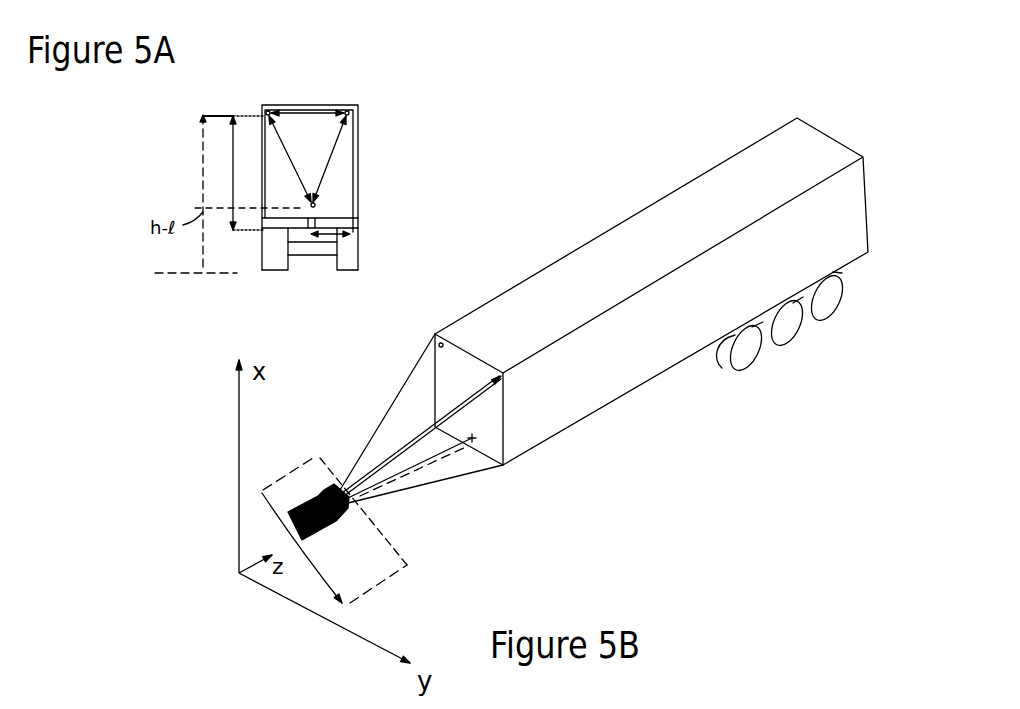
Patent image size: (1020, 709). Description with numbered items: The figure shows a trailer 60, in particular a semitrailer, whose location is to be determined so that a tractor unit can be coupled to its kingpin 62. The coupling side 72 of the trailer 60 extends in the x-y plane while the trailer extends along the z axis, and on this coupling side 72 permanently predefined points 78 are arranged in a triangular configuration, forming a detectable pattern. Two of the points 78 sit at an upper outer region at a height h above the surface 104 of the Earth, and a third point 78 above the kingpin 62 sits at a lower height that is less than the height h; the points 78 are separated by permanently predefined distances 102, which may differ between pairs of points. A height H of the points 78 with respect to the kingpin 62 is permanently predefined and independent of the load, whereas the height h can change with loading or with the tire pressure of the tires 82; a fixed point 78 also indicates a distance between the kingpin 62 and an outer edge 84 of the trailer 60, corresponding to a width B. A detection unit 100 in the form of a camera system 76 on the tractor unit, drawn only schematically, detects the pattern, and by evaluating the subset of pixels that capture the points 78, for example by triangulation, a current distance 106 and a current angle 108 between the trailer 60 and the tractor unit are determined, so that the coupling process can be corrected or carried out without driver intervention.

In FIG. 5A, the trailer 60 is at (360, 146).
In FIG. 5B, the trailer 60 is at (830, 135).
In FIG. 5A, the kingpin 62 is at (310, 245).
In FIG. 5A, the coupling side 72 is at (353, 123).
In FIG. 5B, the coupling side 72 is at (495, 420).
In FIG. 5B, the camera system 76 is at (322, 537).
In FIG. 5A, the permanently predefined points 78 is at (268, 115).
In FIG. 5B, the permanently predefined points 78 is at (437, 333).
In FIG. 5A, the tires 82 is at (262, 268).
In FIG. 5B, the tires 82 is at (843, 293).
In FIG. 5A, the outer edge 84 is at (358, 222).
In FIG. 5B, the detection unit 100 is at (400, 568).
In FIG. 5A, the permanently predefined distance 102 is at (307, 110).
In FIG. 5A, the surface of the Earth 104 is at (190, 270).
In FIG. 5B, the current distance 106 is at (440, 450).
In FIG. 5B, the current angle 108 is at (443, 447).
In FIG. 5A, the width dimension B is at (323, 237).
In FIG. 5A, the height H is at (232, 178).
In FIG. 5A, the height h is at (222, 112).